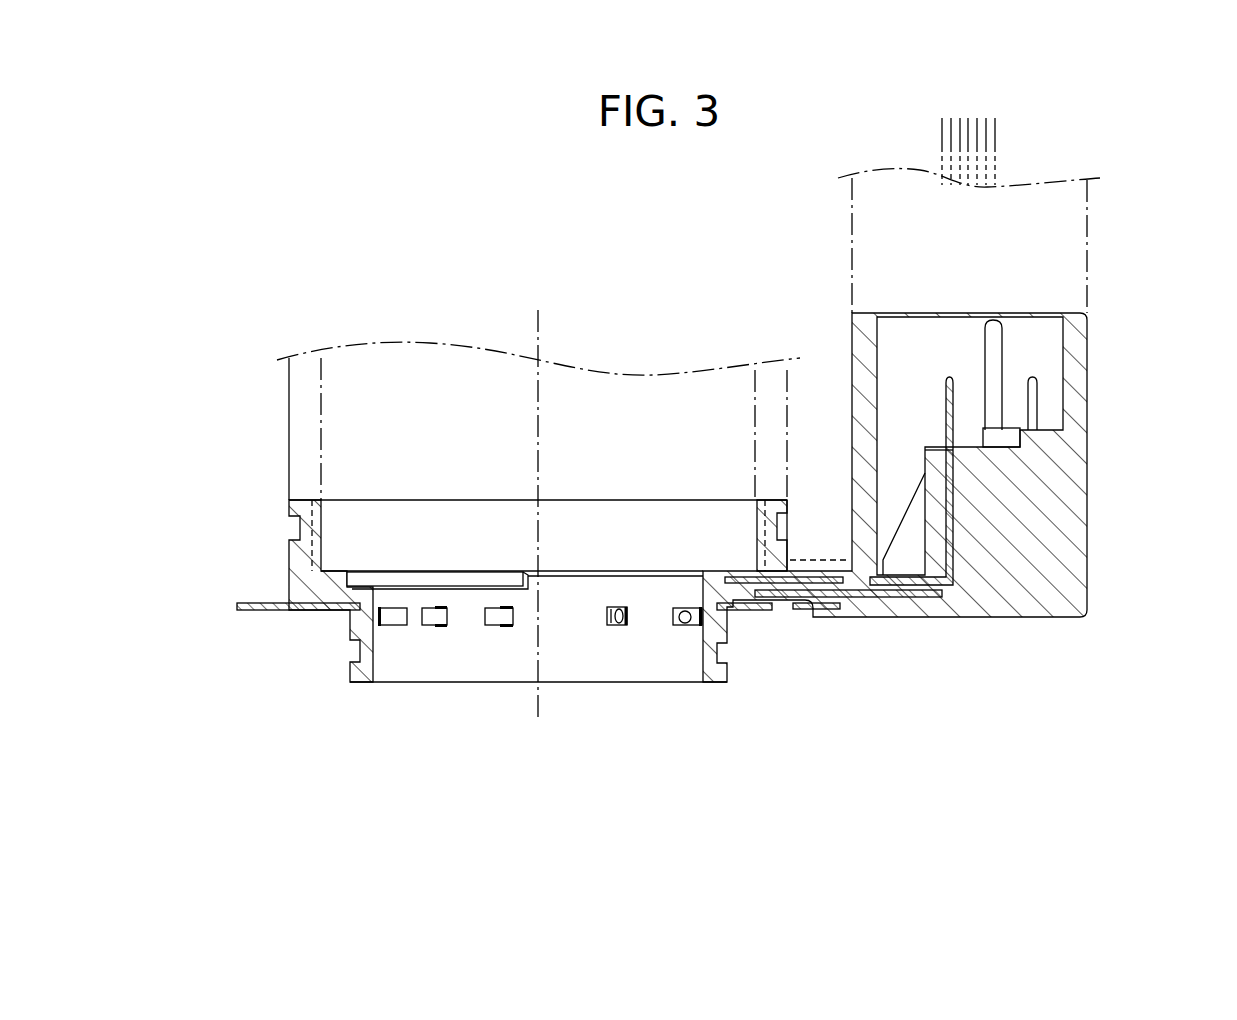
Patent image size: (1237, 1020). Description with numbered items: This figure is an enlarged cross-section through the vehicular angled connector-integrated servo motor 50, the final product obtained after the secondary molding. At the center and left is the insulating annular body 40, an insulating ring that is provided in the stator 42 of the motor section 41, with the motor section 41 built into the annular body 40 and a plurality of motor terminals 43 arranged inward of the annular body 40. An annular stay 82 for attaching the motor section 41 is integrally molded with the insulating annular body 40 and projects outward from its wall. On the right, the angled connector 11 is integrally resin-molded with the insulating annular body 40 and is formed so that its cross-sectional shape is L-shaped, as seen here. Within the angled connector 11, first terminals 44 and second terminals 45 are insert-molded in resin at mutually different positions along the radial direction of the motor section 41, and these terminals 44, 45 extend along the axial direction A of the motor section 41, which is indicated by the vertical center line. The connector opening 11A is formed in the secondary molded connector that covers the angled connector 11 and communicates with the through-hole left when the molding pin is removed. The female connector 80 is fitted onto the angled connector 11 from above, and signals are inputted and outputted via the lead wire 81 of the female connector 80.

The angled connector 11 is at (873, 619).
The connector opening 11A is at (900, 493).
The insulating annular body 40 is at (297, 562).
The motor section 41 is at (286, 418).
The stator 42 is at (298, 397).
The motor terminals 43 is at (433, 628).
The first terminals 44 is at (1033, 410).
The second terminals 45 is at (946, 405).
The vehicular angled connector-integrated servo motor 50 is at (607, 338).
The female connector 80 is at (1062, 226).
The lead wire 81 is at (997, 138).
The annular stay 82 is at (283, 612).
The axial direction A is at (538, 637).